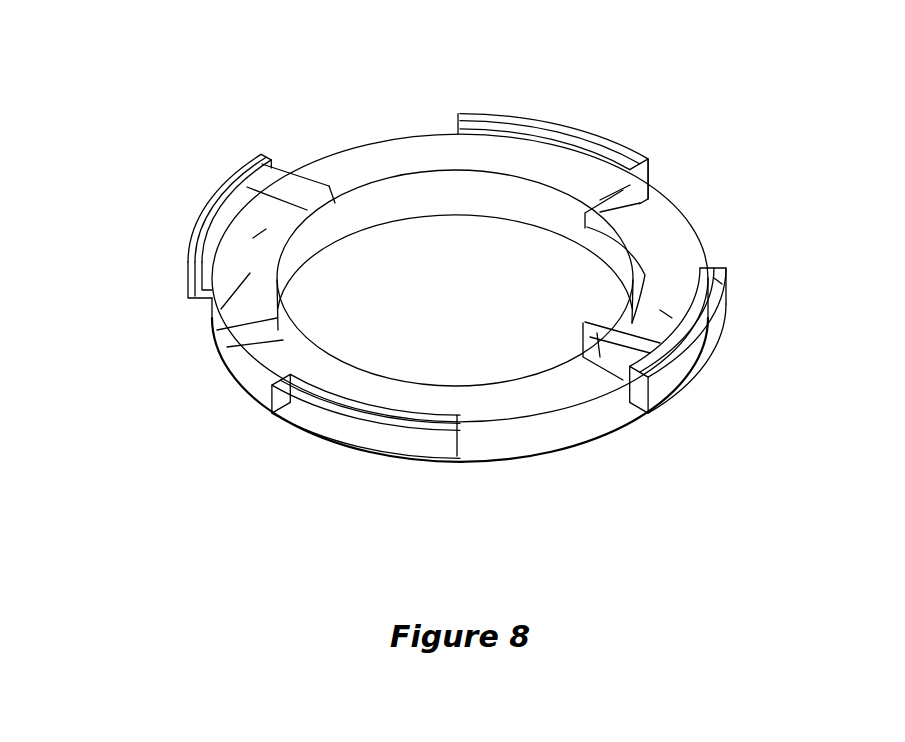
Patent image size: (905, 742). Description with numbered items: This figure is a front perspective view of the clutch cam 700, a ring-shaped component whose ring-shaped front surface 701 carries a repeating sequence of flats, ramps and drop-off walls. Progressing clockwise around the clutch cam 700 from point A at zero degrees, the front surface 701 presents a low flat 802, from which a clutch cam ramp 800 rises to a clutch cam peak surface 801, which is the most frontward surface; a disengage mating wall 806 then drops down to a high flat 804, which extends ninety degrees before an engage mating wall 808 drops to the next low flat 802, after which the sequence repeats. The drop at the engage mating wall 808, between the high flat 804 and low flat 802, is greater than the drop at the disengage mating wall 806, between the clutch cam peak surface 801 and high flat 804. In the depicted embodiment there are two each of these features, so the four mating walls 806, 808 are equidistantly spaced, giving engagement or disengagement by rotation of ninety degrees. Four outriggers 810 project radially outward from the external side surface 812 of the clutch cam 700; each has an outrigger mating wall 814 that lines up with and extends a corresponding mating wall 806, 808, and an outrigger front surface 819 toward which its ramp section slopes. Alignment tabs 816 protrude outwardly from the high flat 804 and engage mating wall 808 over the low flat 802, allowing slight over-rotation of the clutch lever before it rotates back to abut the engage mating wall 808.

The clutch cam 700 is at (333, 83).
The front surface 701 is at (248, 241).
The clutch cam ramp 800 is at (216, 313).
The clutch cam peak surface 801 is at (282, 168).
The low flat 802 is at (650, 222).
The high flat 804 is at (425, 152).
The disengage mating wall 806 is at (308, 167).
The engage mating wall 808 is at (293, 396).
The outrigger 810 is at (530, 115).
The external side surface 812 is at (522, 440).
The outrigger mating wall 814 is at (637, 167).
The alignment tab 816 is at (600, 200).
The outrigger front surface 819 is at (714, 278).
The point A is at (650, 253).